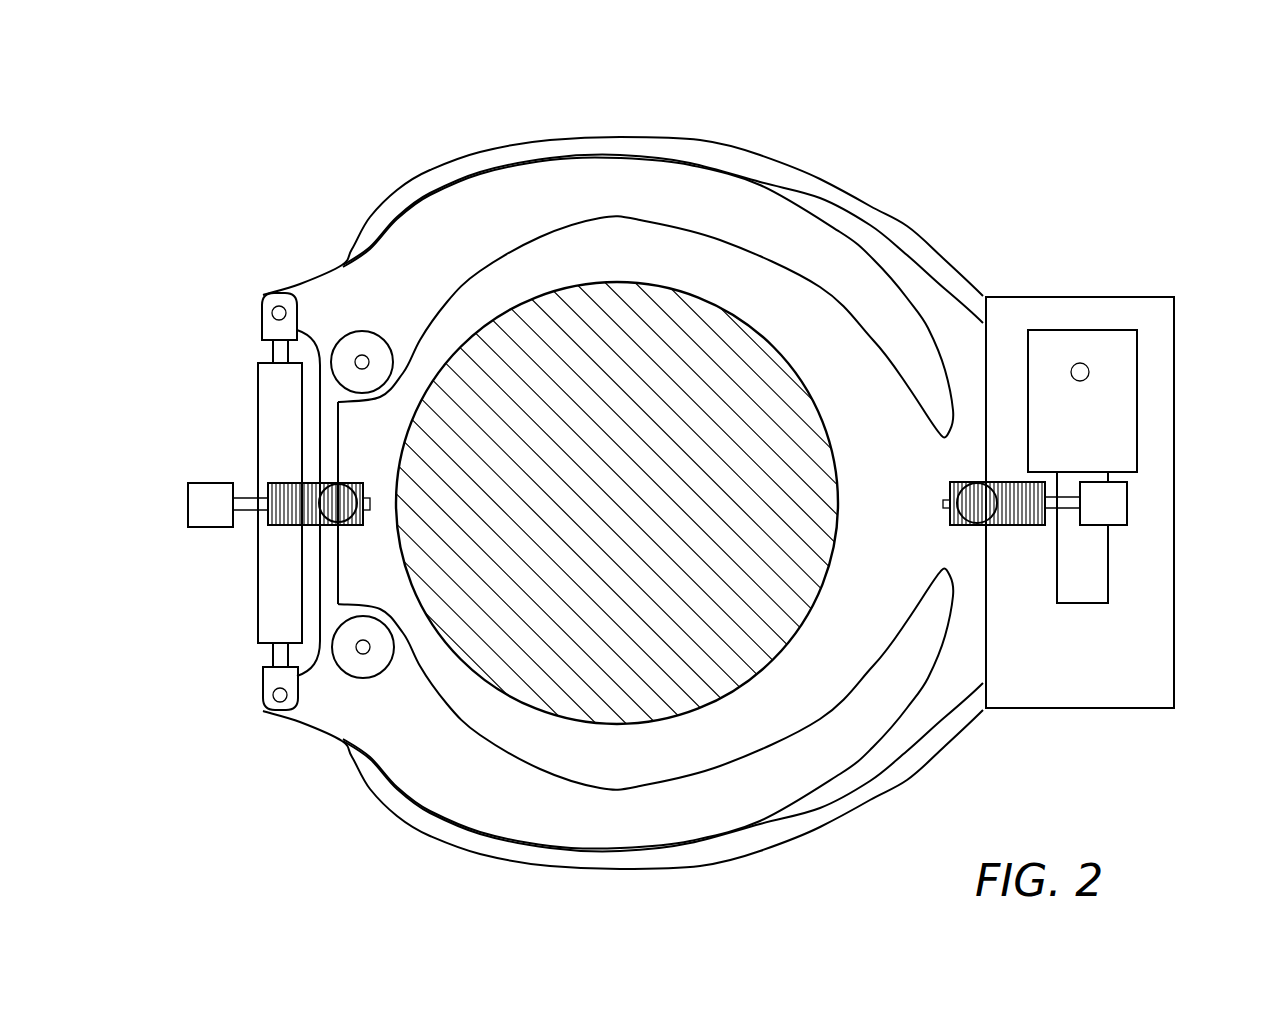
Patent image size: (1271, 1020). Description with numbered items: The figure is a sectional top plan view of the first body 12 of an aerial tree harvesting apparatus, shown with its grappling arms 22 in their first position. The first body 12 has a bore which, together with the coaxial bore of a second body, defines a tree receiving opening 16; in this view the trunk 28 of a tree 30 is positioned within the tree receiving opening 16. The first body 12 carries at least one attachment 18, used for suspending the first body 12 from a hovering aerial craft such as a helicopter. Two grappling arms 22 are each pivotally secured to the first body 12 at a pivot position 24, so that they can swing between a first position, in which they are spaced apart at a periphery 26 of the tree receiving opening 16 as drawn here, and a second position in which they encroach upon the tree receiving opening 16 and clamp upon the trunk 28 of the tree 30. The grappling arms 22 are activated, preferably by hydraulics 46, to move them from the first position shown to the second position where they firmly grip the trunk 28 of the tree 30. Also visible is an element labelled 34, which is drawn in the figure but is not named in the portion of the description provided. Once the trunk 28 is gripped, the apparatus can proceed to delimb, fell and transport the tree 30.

The first body 12 is at (333, 135).
The tree receiving opening 16 is at (778, 300).
The attachment 18 is at (1163, 385).
The grappling arms 22 is at (755, 210).
The pivot position 24 is at (362, 362).
The periphery 26 is at (928, 240).
The trunk 28 is at (640, 435).
The tree 30 is at (590, 310).
The spring assembly 34 is at (302, 525).
The hydraulics 46 is at (268, 435).